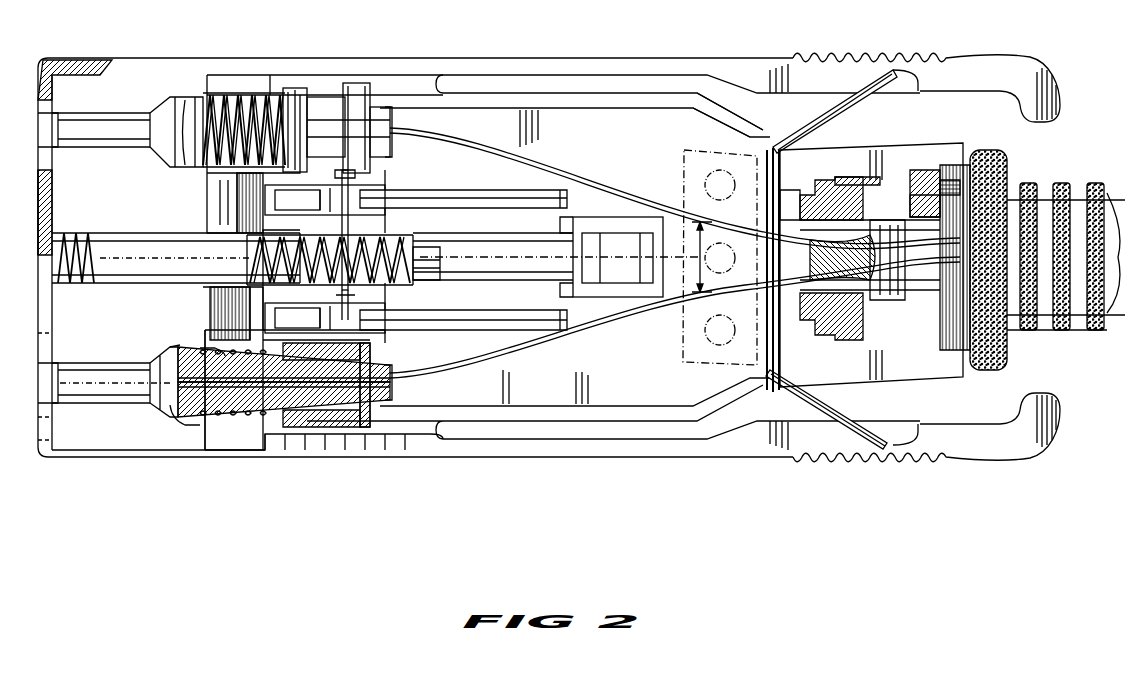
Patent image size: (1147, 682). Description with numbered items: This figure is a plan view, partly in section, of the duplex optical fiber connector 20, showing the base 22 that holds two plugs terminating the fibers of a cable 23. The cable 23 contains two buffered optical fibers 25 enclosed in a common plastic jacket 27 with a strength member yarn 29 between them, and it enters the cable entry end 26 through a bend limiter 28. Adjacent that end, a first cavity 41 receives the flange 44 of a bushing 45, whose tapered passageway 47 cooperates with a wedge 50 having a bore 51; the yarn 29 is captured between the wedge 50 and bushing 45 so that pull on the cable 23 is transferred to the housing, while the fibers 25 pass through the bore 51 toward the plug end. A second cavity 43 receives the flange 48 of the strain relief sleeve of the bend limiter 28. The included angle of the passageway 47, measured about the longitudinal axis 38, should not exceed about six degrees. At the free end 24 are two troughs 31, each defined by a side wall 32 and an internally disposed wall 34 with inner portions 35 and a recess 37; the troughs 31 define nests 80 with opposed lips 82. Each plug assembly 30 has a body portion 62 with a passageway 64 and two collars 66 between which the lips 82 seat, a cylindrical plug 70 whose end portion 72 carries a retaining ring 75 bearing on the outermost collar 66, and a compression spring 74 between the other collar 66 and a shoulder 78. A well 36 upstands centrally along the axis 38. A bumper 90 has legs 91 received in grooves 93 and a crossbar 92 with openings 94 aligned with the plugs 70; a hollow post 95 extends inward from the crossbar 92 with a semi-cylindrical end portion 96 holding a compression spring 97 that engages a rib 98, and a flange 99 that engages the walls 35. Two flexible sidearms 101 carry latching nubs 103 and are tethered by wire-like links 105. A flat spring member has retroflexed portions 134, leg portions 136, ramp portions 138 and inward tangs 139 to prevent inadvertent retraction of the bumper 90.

The duplex optical fiber connector 20 is at (463, 32).
The base 22 is at (740, 133).
The cable 23 is at (1064, 185).
The free or plug end 24 is at (257, 455).
The buffered optical fibers 25 is at (535, 165).
The cable entry end 26 is at (939, 143).
The jacket 27 is at (1107, 192).
The bend limiter 28 is at (1072, 340).
The strength member yarn 29 is at (762, 290).
The connector plug assembly 30 is at (374, 165).
The trough 31 is at (217, 52).
The side wall 32 is at (334, 432).
The internally disposed wall 34 is at (265, 340).
The inner portions of walls 35 is at (234, 232).
The well 36 is at (607, 220).
The longitudinal axis 38 is at (678, 245).
The recess 37 is at (207, 298).
The first cavity 41 is at (840, 178).
The second cavity 43 is at (914, 175).
The flange of bushing 44 is at (814, 178).
The bushing 45 is at (812, 192).
The tapered passageway 47 is at (814, 320).
The flange of strain relief sleeve 48 is at (914, 200).
The wedge 50 is at (870, 310).
The bore 51 is at (832, 310).
The body portion 62 is at (377, 400).
The passageway 64 is at (372, 378).
The collars 66 is at (302, 88).
The plug 70 is at (97, 142).
The end portion of plug 72 is at (180, 365).
The compression spring 74 is at (285, 80).
The retaining ring 75 is at (362, 360).
The shoulder 78 is at (178, 115).
The nest 80 is at (234, 80).
The lips 82 is at (337, 85).
The bumper 90 is at (52, 200).
The legs of bumper 91 is at (137, 57).
The crossbar 92 is at (50, 338).
The groove 93 is at (394, 62).
The openings 94 is at (52, 110).
The hollow post 95 is at (92, 232).
The semi-cylindrical end portion 96 is at (380, 230).
The compression spring 97 is at (64, 282).
The rib 98 is at (457, 237).
The flange 99 is at (367, 297).
The flexible sidearms 101 is at (546, 60).
The latching nub 103 is at (720, 62).
The wire-like link 105 is at (838, 410).
The retroflexed portions 134 is at (437, 200).
The leg portions 136 is at (357, 192).
The ramp portions 138 is at (330, 207).
The tang 139 is at (346, 305).